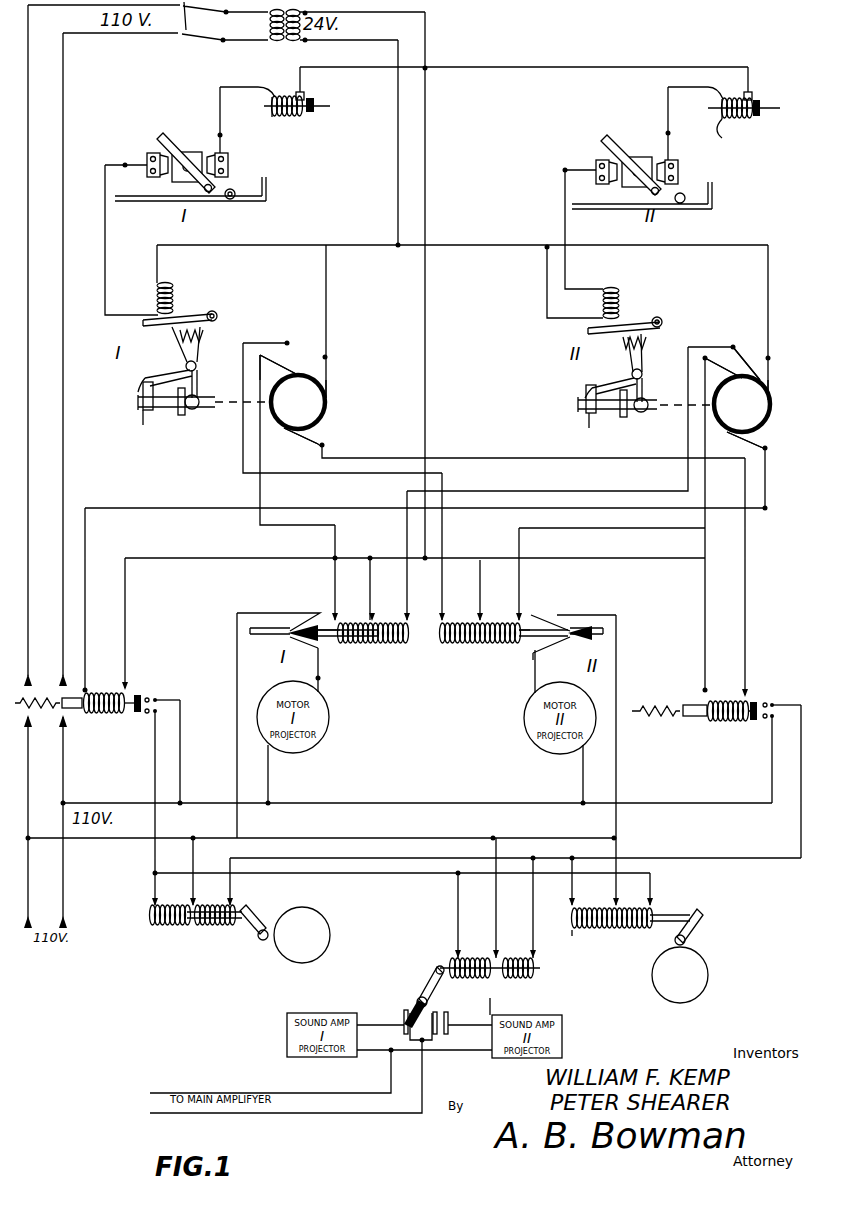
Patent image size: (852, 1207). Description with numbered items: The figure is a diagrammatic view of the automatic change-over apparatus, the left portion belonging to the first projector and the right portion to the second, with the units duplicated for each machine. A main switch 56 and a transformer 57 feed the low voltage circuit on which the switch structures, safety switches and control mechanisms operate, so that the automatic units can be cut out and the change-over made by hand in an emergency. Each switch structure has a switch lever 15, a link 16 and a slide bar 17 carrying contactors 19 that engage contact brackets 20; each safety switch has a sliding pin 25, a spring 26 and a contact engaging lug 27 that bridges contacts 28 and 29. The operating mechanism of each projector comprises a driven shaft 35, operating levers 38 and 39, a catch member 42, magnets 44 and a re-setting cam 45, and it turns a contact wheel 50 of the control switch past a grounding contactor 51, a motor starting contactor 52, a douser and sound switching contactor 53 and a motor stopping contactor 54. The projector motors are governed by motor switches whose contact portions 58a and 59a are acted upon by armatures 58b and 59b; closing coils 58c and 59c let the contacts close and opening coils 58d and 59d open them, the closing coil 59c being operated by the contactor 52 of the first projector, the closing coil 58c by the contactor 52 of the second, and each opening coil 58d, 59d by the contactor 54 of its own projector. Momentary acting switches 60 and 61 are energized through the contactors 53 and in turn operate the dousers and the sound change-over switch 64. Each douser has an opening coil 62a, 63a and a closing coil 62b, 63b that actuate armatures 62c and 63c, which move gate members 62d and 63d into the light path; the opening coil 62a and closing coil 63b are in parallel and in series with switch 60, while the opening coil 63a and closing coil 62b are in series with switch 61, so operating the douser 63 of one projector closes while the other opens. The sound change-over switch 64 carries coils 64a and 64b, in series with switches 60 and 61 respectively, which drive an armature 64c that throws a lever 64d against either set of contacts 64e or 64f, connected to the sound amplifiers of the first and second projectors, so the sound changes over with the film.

The switch lever 15 is at (170, 140).
The link 16 is at (222, 196).
The slide bar 17 is at (266, 192).
The contactors 19 is at (200, 152).
The contact brackets 20 is at (228, 168).
The sliding pin 25 is at (762, 105).
The spring 26 is at (728, 120).
The contact engaging lug 27 is at (762, 116).
The contact 28 is at (724, 105).
The contact 29 is at (752, 94).
The driven shaft 35 is at (175, 405).
The operating lever 38 is at (651, 362).
The operating lever 39 is at (202, 340).
The catch member 42 is at (214, 313).
The magnets 44 is at (175, 292).
The re-setting cam 45 is at (146, 412).
The contact wheel 50 is at (327, 406).
The grounding contactor 51 is at (328, 386).
The motor starting contactor 52 is at (316, 382).
The douser and sound switching contactor 53 is at (320, 440).
The motor stopping contactor 54 is at (275, 378).
The main switch 56 is at (176, 40).
The transformer 57 is at (270, 42).
The contact portion 58a is at (280, 628).
The armature 58b is at (408, 624).
The closing coil 58c is at (395, 648).
The opening coil 58d is at (362, 645).
The contact portion 59a is at (556, 630).
The armature 59b is at (513, 624).
The closing coil 59c is at (462, 646).
The opening coil 59d is at (500, 646).
The momentary acting switch 60 is at (134, 695).
The momentary acting switch 61 is at (748, 700).
The opening coil 62a is at (150, 918).
The closing coil 62b is at (240, 925).
The armature 62c is at (188, 925).
The gate member 62d is at (328, 935).
The douser 63 is at (580, 932).
The opening coil 63a is at (572, 932).
The closing coil 63b is at (628, 932).
The armature 63c is at (680, 925).
The gate member 63d is at (708, 972).
The sound change-over switch 64 is at (440, 965).
The coil 64a is at (470, 958).
The coil 64b is at (512, 958).
The armature 64c is at (500, 990).
The lever 64d is at (422, 996).
The set of contacts 64e is at (404, 1012).
The set of contacts 64f is at (437, 1012).